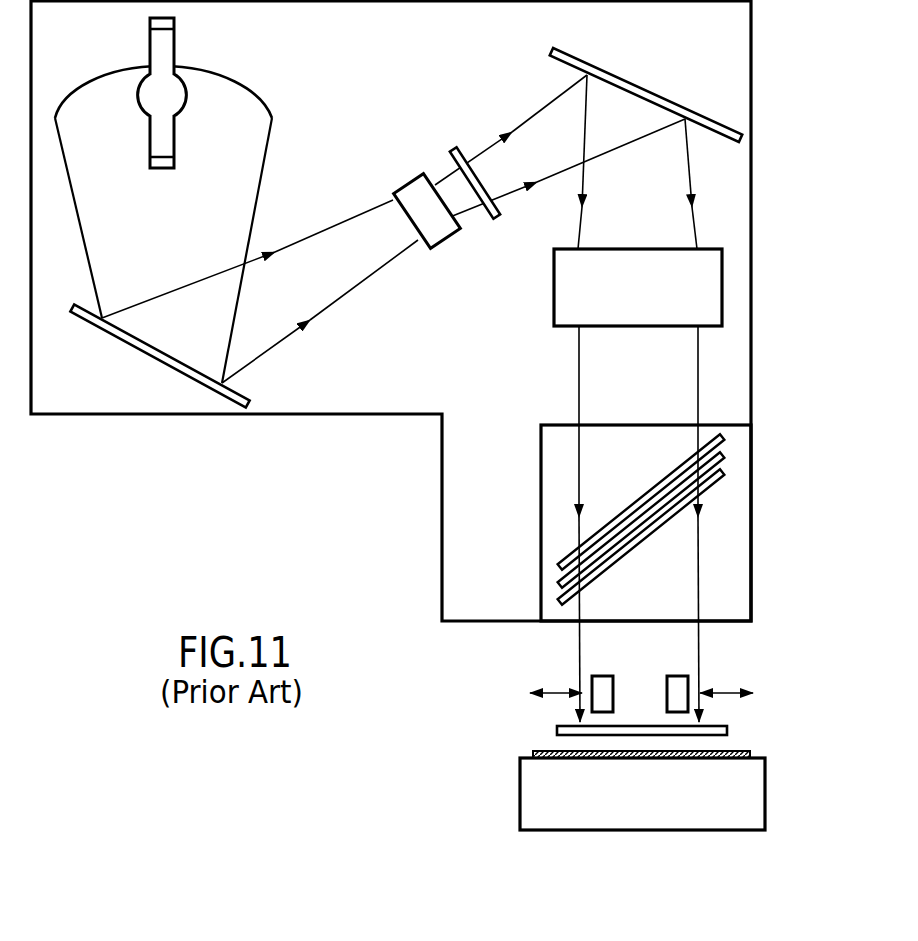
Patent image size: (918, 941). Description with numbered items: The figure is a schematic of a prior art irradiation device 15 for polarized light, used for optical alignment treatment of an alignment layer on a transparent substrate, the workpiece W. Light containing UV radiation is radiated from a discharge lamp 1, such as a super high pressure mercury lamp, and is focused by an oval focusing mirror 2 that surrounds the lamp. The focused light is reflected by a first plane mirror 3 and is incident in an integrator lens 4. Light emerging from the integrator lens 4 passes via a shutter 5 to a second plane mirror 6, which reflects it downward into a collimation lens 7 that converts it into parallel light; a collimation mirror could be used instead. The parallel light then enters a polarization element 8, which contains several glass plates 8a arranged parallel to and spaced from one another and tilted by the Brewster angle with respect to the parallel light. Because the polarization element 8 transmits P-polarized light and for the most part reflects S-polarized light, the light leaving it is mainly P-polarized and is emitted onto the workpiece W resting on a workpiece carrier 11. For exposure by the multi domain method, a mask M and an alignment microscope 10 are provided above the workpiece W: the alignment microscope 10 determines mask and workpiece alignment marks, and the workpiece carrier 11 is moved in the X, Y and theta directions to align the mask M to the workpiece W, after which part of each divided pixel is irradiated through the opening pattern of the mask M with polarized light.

The discharge lamp 1 is at (175, 46).
The oval focusing mirror 2 is at (268, 102).
The first plane mirror 3 is at (140, 352).
The integrator lens 4 is at (410, 178).
The shutter 5 is at (452, 150).
The second plane mirror 6 is at (668, 100).
The collimation lens 7 is at (554, 262).
The polarization element 8 is at (541, 457).
The glass plates 8a is at (562, 553).
The alignment microscope 10 is at (598, 675).
The mask M is at (570, 726).
The workpiece W is at (538, 752).
The workpiece carrier 11 is at (520, 798).
The irradiation device 15 is at (75, 414).